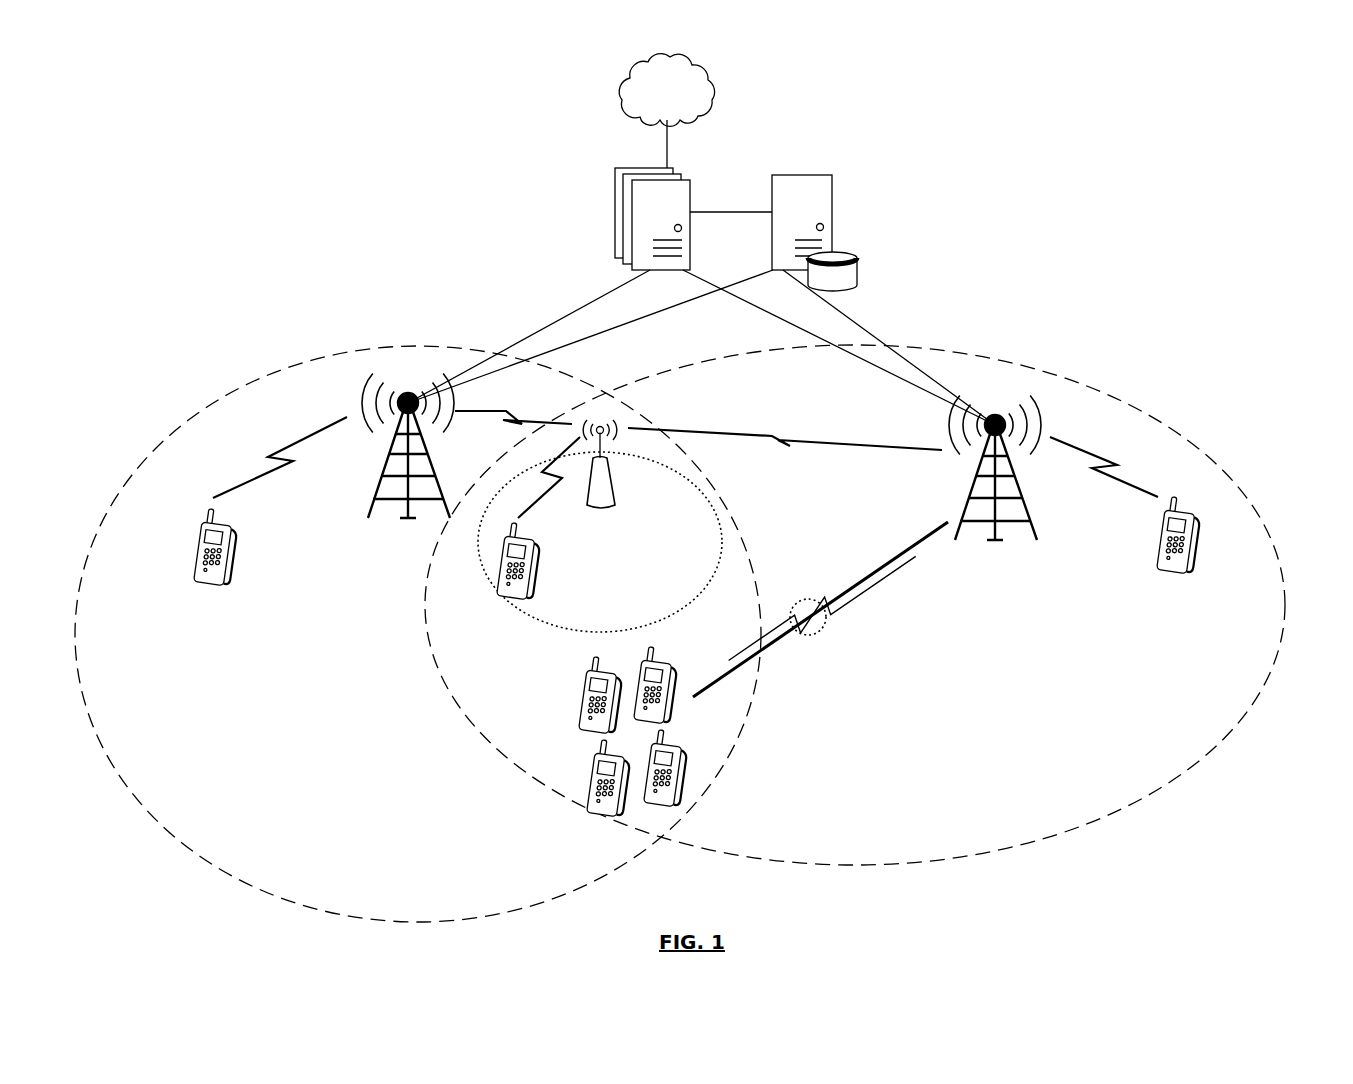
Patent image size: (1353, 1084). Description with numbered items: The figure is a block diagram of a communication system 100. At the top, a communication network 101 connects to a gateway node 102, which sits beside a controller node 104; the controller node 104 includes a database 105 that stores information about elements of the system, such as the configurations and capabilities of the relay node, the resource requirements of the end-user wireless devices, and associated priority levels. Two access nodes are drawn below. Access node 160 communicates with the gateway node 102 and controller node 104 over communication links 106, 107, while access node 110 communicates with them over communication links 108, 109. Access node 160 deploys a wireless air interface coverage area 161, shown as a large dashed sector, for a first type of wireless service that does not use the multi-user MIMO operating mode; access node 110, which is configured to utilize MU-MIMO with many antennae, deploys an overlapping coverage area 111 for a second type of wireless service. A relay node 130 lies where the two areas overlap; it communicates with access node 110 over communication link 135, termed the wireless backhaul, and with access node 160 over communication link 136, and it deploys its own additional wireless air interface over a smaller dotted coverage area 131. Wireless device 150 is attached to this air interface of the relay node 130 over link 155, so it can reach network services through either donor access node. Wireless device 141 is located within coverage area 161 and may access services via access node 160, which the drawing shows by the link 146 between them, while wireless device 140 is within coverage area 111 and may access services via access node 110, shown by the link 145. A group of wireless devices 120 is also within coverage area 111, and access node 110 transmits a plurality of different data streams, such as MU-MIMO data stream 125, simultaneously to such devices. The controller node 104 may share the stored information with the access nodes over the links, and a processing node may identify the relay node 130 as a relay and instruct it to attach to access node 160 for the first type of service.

The communication system 100 is at (1261, 67).
The communication network 101 is at (666, 90).
The gateway node 102 is at (635, 168).
The controller node 104 is at (832, 175).
The database 105 is at (853, 254).
The communication link 106 is at (582, 309).
The communication link 107 is at (585, 338).
The communication link 108 is at (775, 318).
The communication link 109 is at (843, 313).
The access node 110 is at (995, 415).
The coverage area 111 is at (1237, 727).
The wireless devices 120 is at (570, 654).
The MU-MIMO data stream 125 is at (827, 623).
The relay node 130 is at (607, 508).
The coverage areas 131 is at (722, 545).
The communication link 135 is at (777, 430).
The communication link 136 is at (483, 407).
The wireless device 140 is at (1187, 570).
The wireless device 141 is at (227, 582).
The wireless link 145 is at (1122, 482).
The wireless link 146 is at (277, 450).
The wireless device 150 is at (540, 590).
The link 155 is at (545, 475).
The access node 160 is at (408, 393).
The coverage area 161 is at (530, 912).